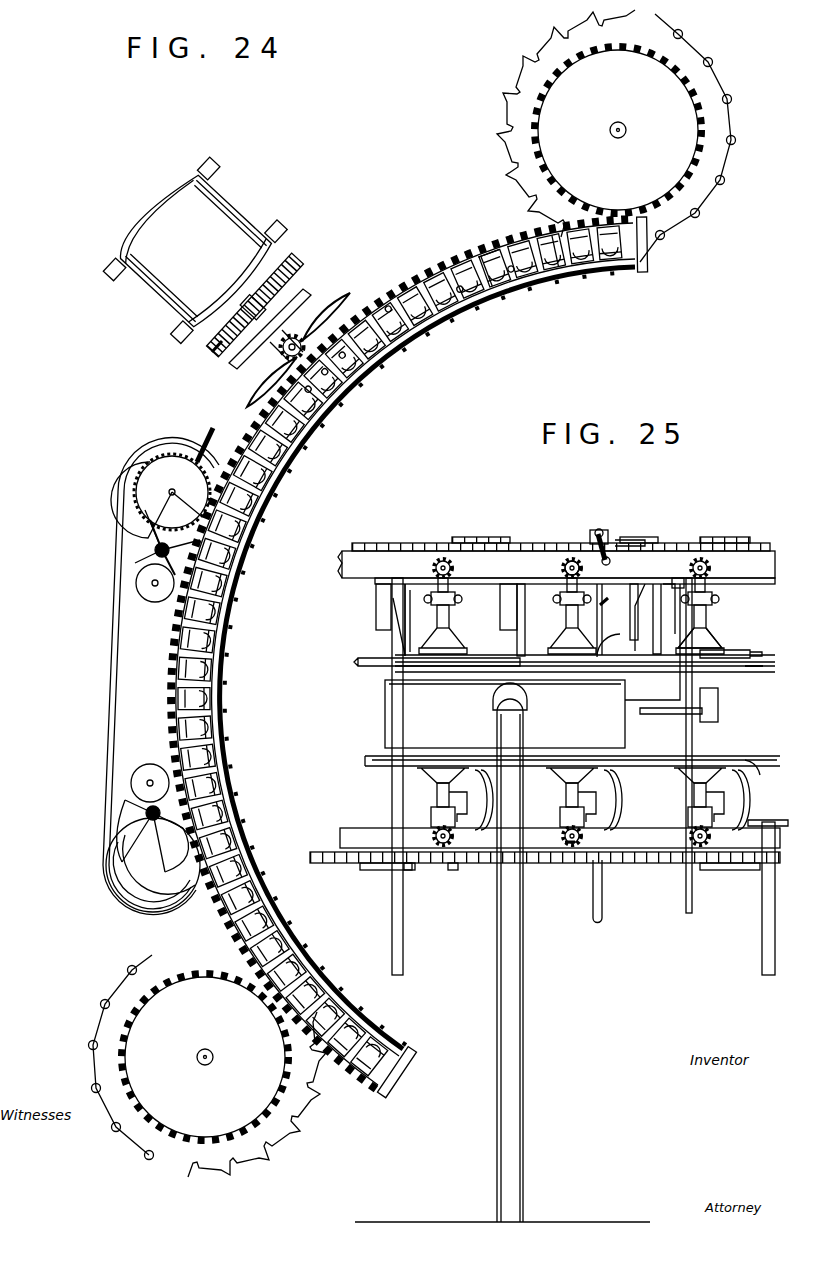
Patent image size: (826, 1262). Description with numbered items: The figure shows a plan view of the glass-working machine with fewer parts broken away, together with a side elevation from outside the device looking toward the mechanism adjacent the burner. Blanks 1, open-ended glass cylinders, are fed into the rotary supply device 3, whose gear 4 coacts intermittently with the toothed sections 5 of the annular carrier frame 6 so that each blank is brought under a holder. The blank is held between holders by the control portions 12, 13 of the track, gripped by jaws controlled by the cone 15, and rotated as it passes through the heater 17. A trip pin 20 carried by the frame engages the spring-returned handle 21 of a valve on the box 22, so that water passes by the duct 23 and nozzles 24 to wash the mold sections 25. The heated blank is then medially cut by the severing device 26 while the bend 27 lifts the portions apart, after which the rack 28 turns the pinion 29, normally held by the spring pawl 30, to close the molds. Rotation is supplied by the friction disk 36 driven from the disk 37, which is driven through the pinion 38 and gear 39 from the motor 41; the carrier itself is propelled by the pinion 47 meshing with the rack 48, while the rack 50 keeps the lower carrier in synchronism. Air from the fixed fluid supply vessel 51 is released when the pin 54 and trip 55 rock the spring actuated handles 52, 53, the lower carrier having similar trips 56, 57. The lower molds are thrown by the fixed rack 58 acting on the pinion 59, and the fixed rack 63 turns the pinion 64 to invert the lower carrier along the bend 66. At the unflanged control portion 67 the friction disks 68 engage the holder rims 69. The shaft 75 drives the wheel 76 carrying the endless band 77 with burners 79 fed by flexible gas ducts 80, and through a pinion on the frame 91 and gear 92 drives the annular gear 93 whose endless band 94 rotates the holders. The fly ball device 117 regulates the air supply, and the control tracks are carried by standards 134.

In FIG. 24, the blank 1 is at (712, 62).
In FIG. 24, the rotary supply device 3 is at (517, 88).
In FIG. 24, the gear 4 is at (548, 82).
In FIG. 24, the toothed section 5 is at (392, 278).
In FIG. 25, the toothed section 5 is at (448, 540).
In FIG. 24, the annular carrier frame 6 is at (603, 276).
In FIG. 25, the annular carrier frame 6 is at (345, 556).
In FIG. 25, the control portion of the track 12 is at (375, 668).
In FIG. 25, the control portion of the track 13 is at (405, 768).
In FIG. 25, the cone 15 is at (720, 638).
In FIG. 24, the heater 17 is at (455, 250).
In FIG. 25, the heater 17 is at (388, 708).
In FIG. 24, the trip pin 20 is at (372, 290).
In FIG. 25, the trip pin 20 is at (598, 534).
In FIG. 25, the handle 21 is at (620, 540).
In FIG. 24, the box 22 is at (468, 330).
In FIG. 25, the box 22 is at (600, 530).
In FIG. 25, the duct 23 is at (606, 602).
In FIG. 25, the nozzle 24 is at (615, 641).
In FIG. 25, the mold section 25 is at (720, 712).
In FIG. 25, the severing device 26 is at (665, 716).
In FIG. 25, the bend 27 is at (718, 588).
In FIG. 25, the rack 28 is at (677, 582).
In FIG. 25, the pinion 29 is at (562, 572).
In FIG. 25, the spring pawl 30 is at (563, 565).
In FIG. 24, the friction disk 36 is at (338, 300).
In FIG. 24, the friction disk 37 is at (252, 399).
In FIG. 24, the pinion 38 is at (230, 352).
In FIG. 24, the gear 39 is at (292, 262).
In FIG. 24, the motor 41 is at (160, 305).
In FIG. 24, the pinion 47 is at (298, 335).
In FIG. 24, the rack 48 is at (410, 273).
In FIG. 25, the rack 48 is at (383, 545).
In FIG. 25, the rack 50 is at (340, 866).
In FIG. 24, the fixed fluid supply vessel 51 is at (366, 392).
In FIG. 24, the spring actuated handle 52 is at (380, 378).
In FIG. 24, the spring actuated handle 53 is at (332, 406).
In FIG. 24, the pin 54 is at (545, 282).
In FIG. 24, the trip 55 is at (572, 312).
In FIG. 25, the trip 56 is at (454, 872).
In FIG. 25, the trip 57 is at (408, 872).
In FIG. 25, the fixed rack 58 is at (690, 848).
In FIG. 25, the pinion 59 is at (570, 845).
In FIG. 25, the fixed rack 63 is at (760, 830).
In FIG. 25, the pinion 64 is at (580, 843).
In FIG. 25, the bend 66 is at (755, 768).
In FIG. 24, the control portion of the track 67 is at (374, 287).
In FIG. 25, the control portion of the track 67 is at (750, 667).
In FIG. 24, the friction disk 68 is at (558, 262).
In FIG. 25, the friction disk 68 is at (396, 636).
In FIG. 24, the holder rim 69 is at (574, 272).
In FIG. 24, the shaft 75 is at (172, 486).
In FIG. 24, the wheel 76 is at (140, 905).
In FIG. 24, the endless band 77 is at (135, 548).
In FIG. 24, the burner 79 is at (128, 860).
In FIG. 24, the flexible gas duct 80 is at (155, 492).
In FIG. 24, the frame 91 is at (202, 428).
In FIG. 24, the gear 92 is at (150, 520).
In FIG. 24, the annular gear 93 is at (140, 452).
In FIG. 24, the endless band 94 is at (115, 600).
In FIG. 25, the fly ball device 117 is at (455, 640).
In FIG. 25, the standard 134 is at (405, 946).